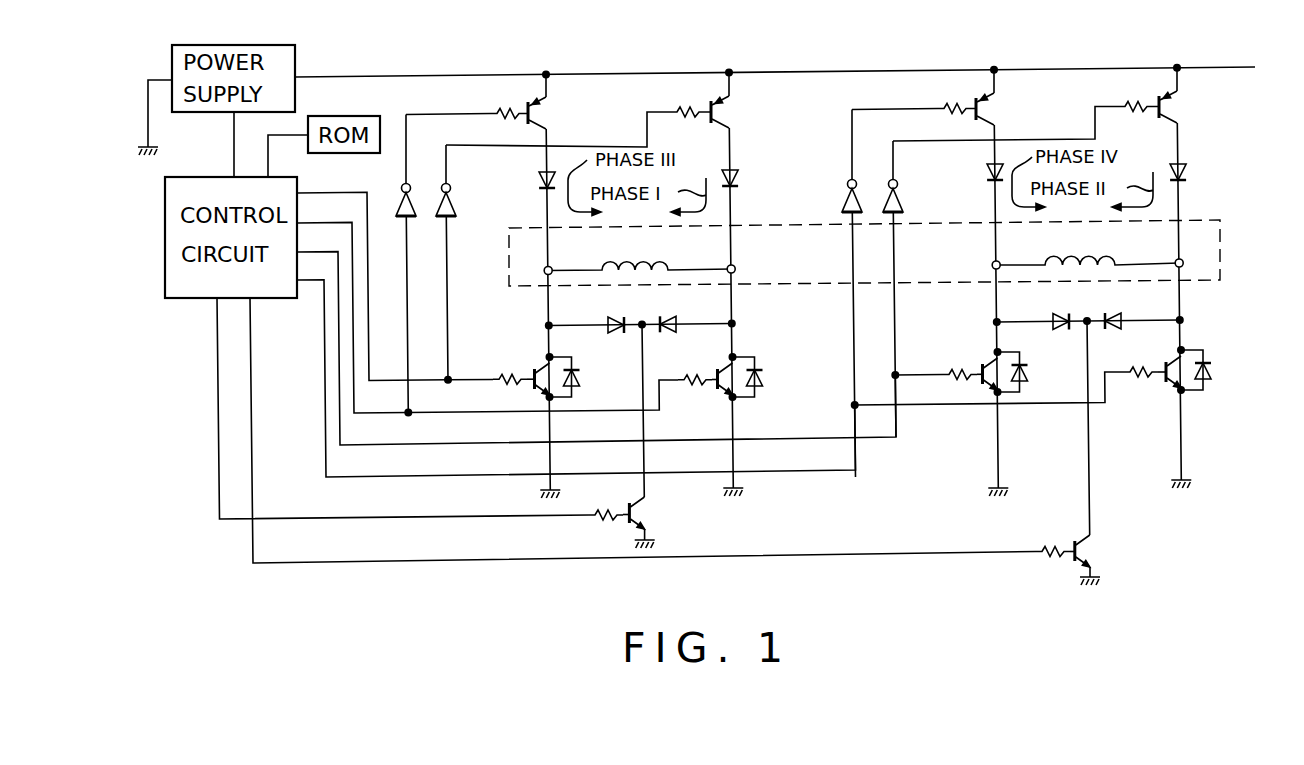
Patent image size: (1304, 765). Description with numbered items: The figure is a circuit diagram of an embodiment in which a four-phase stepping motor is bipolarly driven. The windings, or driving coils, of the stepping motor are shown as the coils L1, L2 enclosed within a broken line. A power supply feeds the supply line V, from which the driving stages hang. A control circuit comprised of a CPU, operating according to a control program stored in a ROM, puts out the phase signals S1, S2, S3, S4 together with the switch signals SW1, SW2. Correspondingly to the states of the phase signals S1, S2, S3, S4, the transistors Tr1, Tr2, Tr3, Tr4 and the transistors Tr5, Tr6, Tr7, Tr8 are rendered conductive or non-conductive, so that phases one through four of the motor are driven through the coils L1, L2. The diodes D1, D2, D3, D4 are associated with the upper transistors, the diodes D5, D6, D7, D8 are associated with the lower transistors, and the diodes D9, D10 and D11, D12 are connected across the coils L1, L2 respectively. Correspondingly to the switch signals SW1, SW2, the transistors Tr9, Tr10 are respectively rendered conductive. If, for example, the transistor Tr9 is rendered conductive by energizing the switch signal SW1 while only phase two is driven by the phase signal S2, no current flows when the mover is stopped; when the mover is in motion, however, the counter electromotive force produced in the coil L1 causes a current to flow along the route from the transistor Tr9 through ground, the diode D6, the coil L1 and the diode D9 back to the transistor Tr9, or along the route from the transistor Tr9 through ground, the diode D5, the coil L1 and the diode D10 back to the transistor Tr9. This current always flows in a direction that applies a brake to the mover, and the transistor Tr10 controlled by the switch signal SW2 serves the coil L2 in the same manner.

The power supply voltage line V is at (785, 68).
The phase signal S1 is at (395, 276).
The phase signal S2 is at (487, 308).
The phase signal S3 is at (620, 337).
The phase signal S4 is at (710, 366).
The switch signal SW1 is at (372, 408).
The switch signal SW2 is at (643, 430).
The transistor Tr1 is at (496, 113).
The transistor Tr2 is at (607, 121).
The transistor Tr3 is at (942, 109).
The transistor Tr4 is at (1054, 116).
The transistor Tr5 is at (540, 364).
The transistor Tr6 is at (722, 365).
The transistor Tr7 is at (988, 357).
The transistor Tr8 is at (1172, 354).
The transistor Tr9 is at (637, 513).
The transistor Tr10 is at (1089, 551).
The diode D1 is at (530, 181).
The diode D2 is at (749, 178).
The diode D3 is at (974, 175).
The diode D4 is at (1195, 173).
The diode D5 is at (582, 377).
The diode D6 is at (763, 377).
The diode D7 is at (1027, 372).
The diode D8 is at (1212, 370).
The diode D9 is at (607, 312).
The diode D10 is at (683, 311).
The diode D11 is at (1055, 308).
The diode D12 is at (1132, 307).
The winding L1 is at (639, 253).
The winding L2 is at (1087, 246).